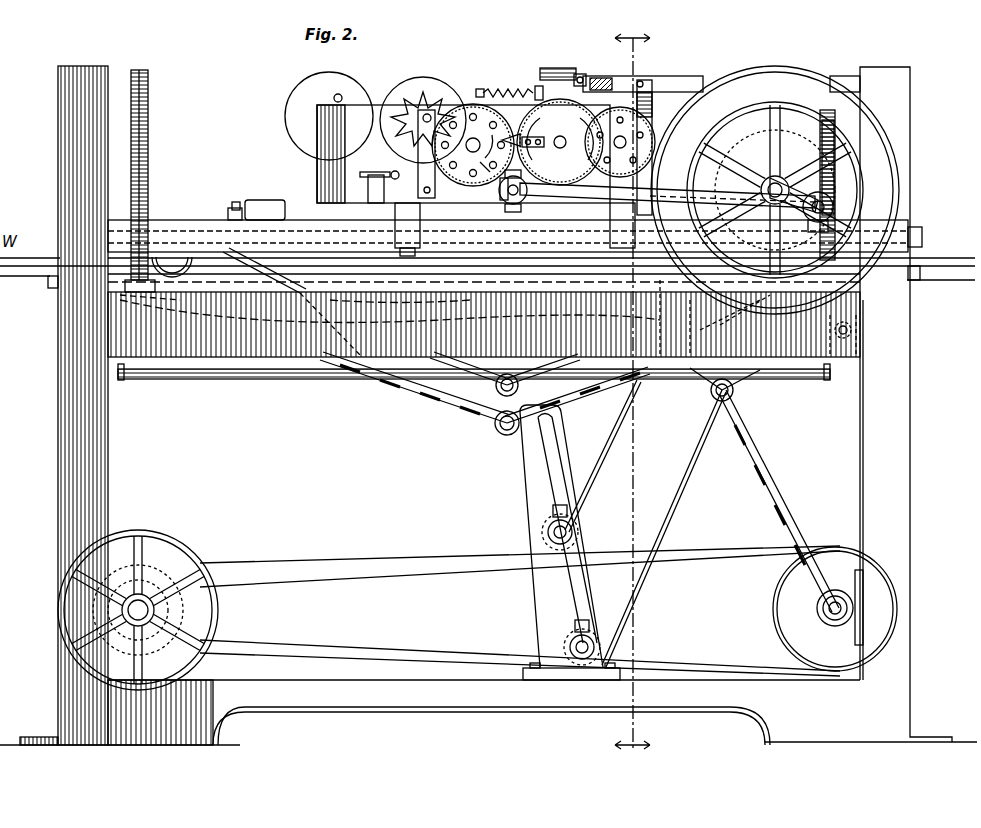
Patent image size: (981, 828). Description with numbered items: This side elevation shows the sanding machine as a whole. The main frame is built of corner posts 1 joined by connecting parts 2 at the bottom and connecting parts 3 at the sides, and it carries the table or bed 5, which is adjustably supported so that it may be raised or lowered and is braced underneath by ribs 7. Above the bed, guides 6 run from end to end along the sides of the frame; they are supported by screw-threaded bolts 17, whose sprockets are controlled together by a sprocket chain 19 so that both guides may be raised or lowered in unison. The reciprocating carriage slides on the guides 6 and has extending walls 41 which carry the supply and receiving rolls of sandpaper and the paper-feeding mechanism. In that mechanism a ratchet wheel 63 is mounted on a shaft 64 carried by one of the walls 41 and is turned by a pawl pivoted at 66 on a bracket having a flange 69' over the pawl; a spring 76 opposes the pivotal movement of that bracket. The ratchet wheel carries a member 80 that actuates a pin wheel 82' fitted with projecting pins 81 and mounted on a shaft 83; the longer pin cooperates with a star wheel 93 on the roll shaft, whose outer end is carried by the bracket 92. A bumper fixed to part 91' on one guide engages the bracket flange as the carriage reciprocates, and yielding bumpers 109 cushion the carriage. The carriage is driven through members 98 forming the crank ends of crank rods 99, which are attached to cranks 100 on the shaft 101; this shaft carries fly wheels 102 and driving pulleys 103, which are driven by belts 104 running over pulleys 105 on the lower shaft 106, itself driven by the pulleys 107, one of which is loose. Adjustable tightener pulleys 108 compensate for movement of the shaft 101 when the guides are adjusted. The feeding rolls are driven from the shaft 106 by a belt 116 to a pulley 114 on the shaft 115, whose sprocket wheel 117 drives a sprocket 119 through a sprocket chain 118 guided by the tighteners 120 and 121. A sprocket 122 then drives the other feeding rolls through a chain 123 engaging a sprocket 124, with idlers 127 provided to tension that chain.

The posts 1 is at (78, 66).
The connecting parts 2 is at (355, 707).
The connecting parts 3 is at (222, 345).
The table or bed 5 is at (370, 280).
The guides 6 is at (245, 236).
The ribs 7 is at (410, 325).
The screw-threaded members or bolts 17 is at (148, 128).
The sprocket chain 19 is at (283, 380).
The extending walls 41 is at (390, 112).
The ratchet wheel 63 is at (603, 84).
The shaft 64 is at (560, 142).
The pivot 66 is at (581, 75).
The flange 69' is at (561, 54).
The spring 76 is at (508, 89).
The member 80 is at (508, 138).
The pins 81 is at (475, 155).
The pin wheel 82' is at (644, 112).
The shaft or support 83 is at (473, 138).
The part 91' is at (691, 125).
The bracket 92 is at (418, 151).
The star wheel 93 is at (430, 108).
The members 98 is at (528, 205).
The crank rods 99 is at (580, 205).
The cranks 100 is at (830, 172).
The shaft 101 is at (780, 120).
The fly wheels 102 is at (880, 170).
The driving pulleys 103 is at (832, 138).
The belts 104 is at (683, 478).
The pulleys 105 is at (243, 565).
The shaft 106 is at (138, 600).
The pulleys 107 is at (170, 540).
The pulleys 108 is at (548, 530).
The bumpers 109 is at (286, 218).
The pulley 114 is at (776, 597).
The shaft 115 is at (842, 608).
The belt 116 is at (690, 560).
The sprocket wheel 117 is at (828, 592).
The sprocket chain 118 is at (750, 442).
The sprocket 119 is at (867, 226).
The guide and tightener 120 is at (855, 330).
The guide and tightener 121 is at (733, 396).
The sprocket 122 is at (893, 258).
The chain 123 is at (490, 380).
The sprocket 124 is at (172, 262).
The idlers or tighteners 127 is at (495, 424).